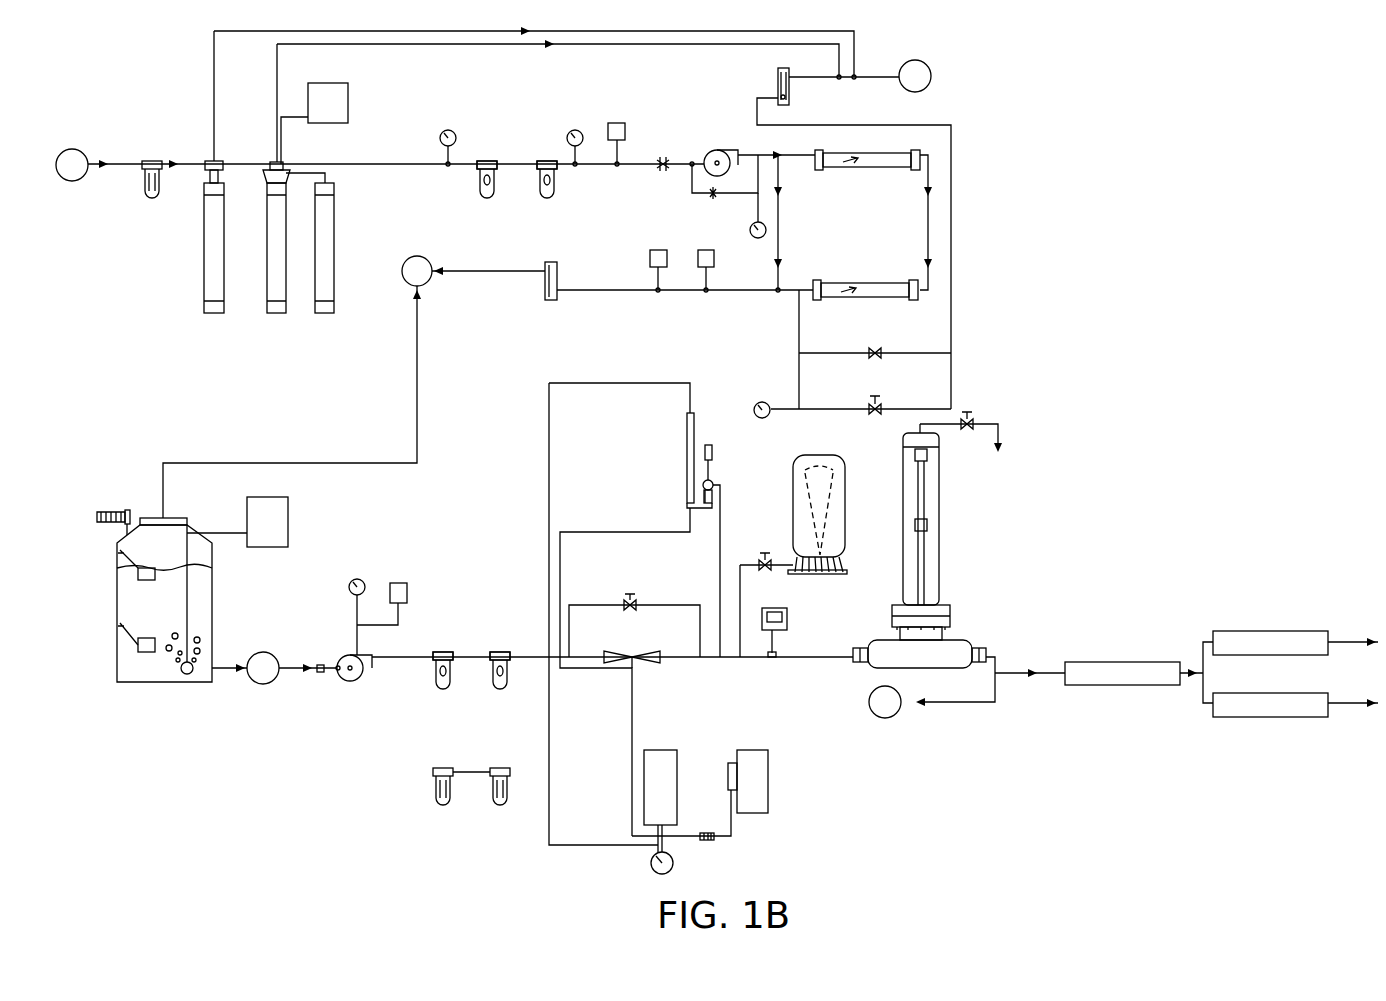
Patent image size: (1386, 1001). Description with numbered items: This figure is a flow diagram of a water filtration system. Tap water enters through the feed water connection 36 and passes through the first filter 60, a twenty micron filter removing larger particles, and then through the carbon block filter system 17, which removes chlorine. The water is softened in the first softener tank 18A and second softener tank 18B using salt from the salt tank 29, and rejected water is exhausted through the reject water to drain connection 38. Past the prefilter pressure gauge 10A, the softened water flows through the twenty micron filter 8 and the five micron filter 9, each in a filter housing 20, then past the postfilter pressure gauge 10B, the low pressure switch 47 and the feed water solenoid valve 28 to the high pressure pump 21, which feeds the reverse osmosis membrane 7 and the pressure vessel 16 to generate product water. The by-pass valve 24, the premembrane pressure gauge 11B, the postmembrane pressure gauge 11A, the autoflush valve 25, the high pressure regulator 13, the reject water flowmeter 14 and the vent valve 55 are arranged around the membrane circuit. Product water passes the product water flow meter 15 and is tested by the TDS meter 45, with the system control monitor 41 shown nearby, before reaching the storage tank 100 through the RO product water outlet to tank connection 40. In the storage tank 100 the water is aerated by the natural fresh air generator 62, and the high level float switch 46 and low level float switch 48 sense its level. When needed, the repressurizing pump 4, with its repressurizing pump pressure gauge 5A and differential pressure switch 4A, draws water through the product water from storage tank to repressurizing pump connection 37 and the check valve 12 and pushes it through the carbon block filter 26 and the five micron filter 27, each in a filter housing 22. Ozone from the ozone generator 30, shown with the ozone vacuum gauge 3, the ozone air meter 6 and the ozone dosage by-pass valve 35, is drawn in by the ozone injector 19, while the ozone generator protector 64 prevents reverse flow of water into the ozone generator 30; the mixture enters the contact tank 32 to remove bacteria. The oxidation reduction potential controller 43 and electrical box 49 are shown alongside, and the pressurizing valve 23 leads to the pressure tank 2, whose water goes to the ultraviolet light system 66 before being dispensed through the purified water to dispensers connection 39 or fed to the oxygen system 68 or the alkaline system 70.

The feed water connection 36 is at (66, 151).
The first filter 60 is at (150, 160).
The carbon block filter system 17 is at (214, 315).
The first softener tank 18A is at (277, 315).
The second softener tank 18B is at (325, 315).
The salt tank 29 is at (348, 92).
The prefilter pressure gauge 10A is at (440, 138).
The RO product water outlet to tank connection 40 is at (407, 260).
The filter housing 20 is at (484, 160).
The 20 micron filter 8 is at (480, 200).
The 5 micron filter 9 is at (556, 182).
The postfilter pressure gauge 10B is at (572, 130).
The low pressure switch 47 is at (614, 122).
The feed water solenoid valve 28 is at (660, 156).
The high pressure pump 21 is at (714, 150).
The pressure vessel 16 is at (800, 155).
The by-pass valve 24 is at (716, 198).
The postmembrane pressure gauge 11A is at (757, 240).
The product water flow meter 15 is at (545, 262).
The total dissolved solution (TDS) meter 45 is at (656, 250).
The system control monitor 41 is at (700, 250).
The reject water flowmeter 14 is at (789, 92).
The reject water to drain connection 38 is at (903, 64).
The reverse osmosis (RO) membrane 7 is at (855, 168).
The autoflush valve 25 is at (882, 347).
The high pressure regulator 13 is at (883, 404).
The premembrane pressure gauge 11B is at (755, 403).
The vent valve 55 is at (966, 412).
The contact tank 32 is at (903, 515).
The purified water to dispensers connection 39 is at (893, 716).
The ultraviolet (UV) light system 66 is at (1143, 662).
The alkaline system 70 is at (1266, 631).
The oxygen system 68 is at (1264, 717).
The pressure tank 2 is at (808, 577).
The pressurizing valve 23 is at (764, 554).
The oxidation reduction potential (ORP) controller 43 is at (784, 632).
The electrical box 49 is at (750, 750).
The ozone air meter 6 is at (714, 840).
The ozone generator 30 is at (660, 750).
The ozone vacuum gauge 3 is at (673, 866).
The ozone generator protector 64 is at (686, 438).
The ozone dosage by-pass valve 35 is at (638, 598).
The ozone injector 19 is at (628, 655).
The storage tank 100 is at (187, 524).
The high level float switch 46 is at (138, 578).
The low level float switch 48 is at (138, 648).
The natural fresh air generator 62 is at (288, 517).
The product water from storage tank to repressurizing pump connection 37 is at (255, 655).
The check valve 12 is at (318, 664).
The repressurizing pump 4 is at (350, 682).
The repressurizing pump pressure gauge 5A is at (360, 578).
The differential pressure switch 4A is at (400, 582).
The filter housing 22 is at (441, 651).
The carbon block filter 26 is at (436, 688).
The 5 micron filter 27 is at (506, 690).